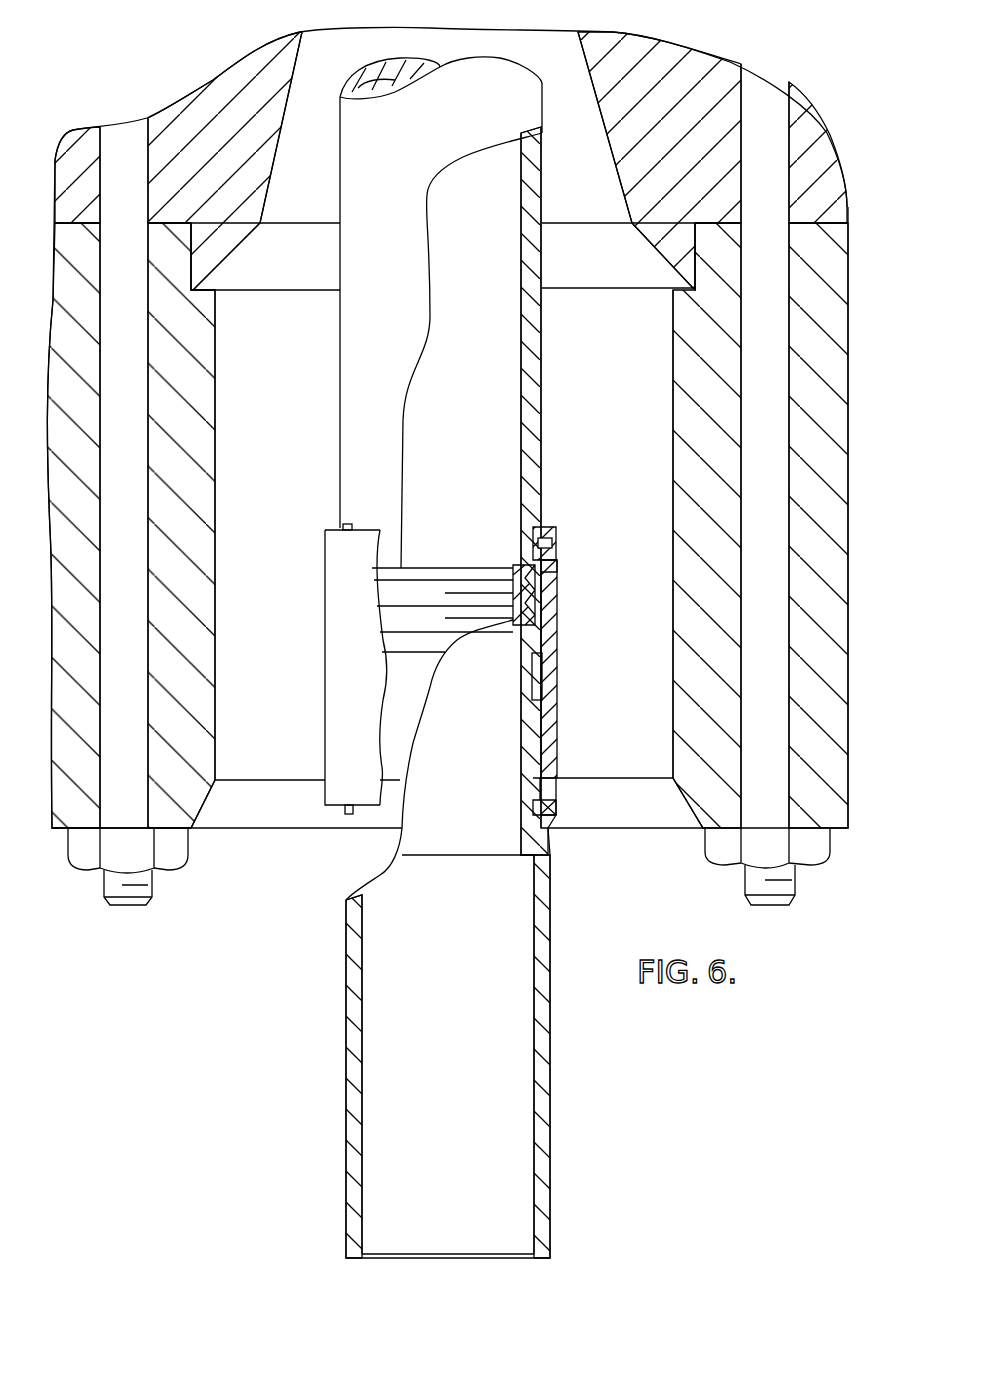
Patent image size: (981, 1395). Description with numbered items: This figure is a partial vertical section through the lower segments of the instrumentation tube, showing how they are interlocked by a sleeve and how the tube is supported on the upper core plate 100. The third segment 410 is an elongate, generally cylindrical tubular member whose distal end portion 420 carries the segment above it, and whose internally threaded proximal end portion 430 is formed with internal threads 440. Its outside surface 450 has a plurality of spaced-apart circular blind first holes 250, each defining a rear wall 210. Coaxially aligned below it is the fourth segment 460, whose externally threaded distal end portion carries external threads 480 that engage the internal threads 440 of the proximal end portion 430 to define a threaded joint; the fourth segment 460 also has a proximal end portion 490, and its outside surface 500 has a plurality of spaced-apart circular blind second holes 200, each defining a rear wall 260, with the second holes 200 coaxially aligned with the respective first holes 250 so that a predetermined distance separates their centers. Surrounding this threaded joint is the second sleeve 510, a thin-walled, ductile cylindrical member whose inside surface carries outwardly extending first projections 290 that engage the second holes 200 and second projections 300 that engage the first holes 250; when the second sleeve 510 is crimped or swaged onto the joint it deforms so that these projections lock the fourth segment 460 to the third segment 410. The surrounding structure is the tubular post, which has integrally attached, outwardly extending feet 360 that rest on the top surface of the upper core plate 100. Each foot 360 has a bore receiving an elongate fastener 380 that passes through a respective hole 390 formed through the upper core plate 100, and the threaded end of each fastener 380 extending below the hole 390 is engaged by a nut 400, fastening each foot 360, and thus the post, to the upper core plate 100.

The upper core plate 100 is at (824, 663).
The second holes 200 is at (552, 791).
The rear wall 210 is at (554, 801).
The first holes 250 is at (350, 529).
The rear wall 260 is at (556, 567).
The first projections 290 is at (548, 819).
The second projections 300 is at (552, 543).
The feet 360 is at (262, 112).
The fastener 380 is at (120, 150).
The holes 390 is at (100, 689).
The nut 400 is at (170, 854).
The third segment 410 is at (372, 124).
The distal end portion 420 is at (338, 250).
The proximal end portion 430 is at (364, 412).
The internal threads 440 is at (550, 633).
The outside surface 450 is at (532, 381).
The fourth segment 460 is at (352, 993).
The external threads 480 is at (478, 612).
The proximal end portion 490 is at (352, 1153).
The outside surface 500 is at (540, 1129).
The second sleeve 510 is at (345, 706).